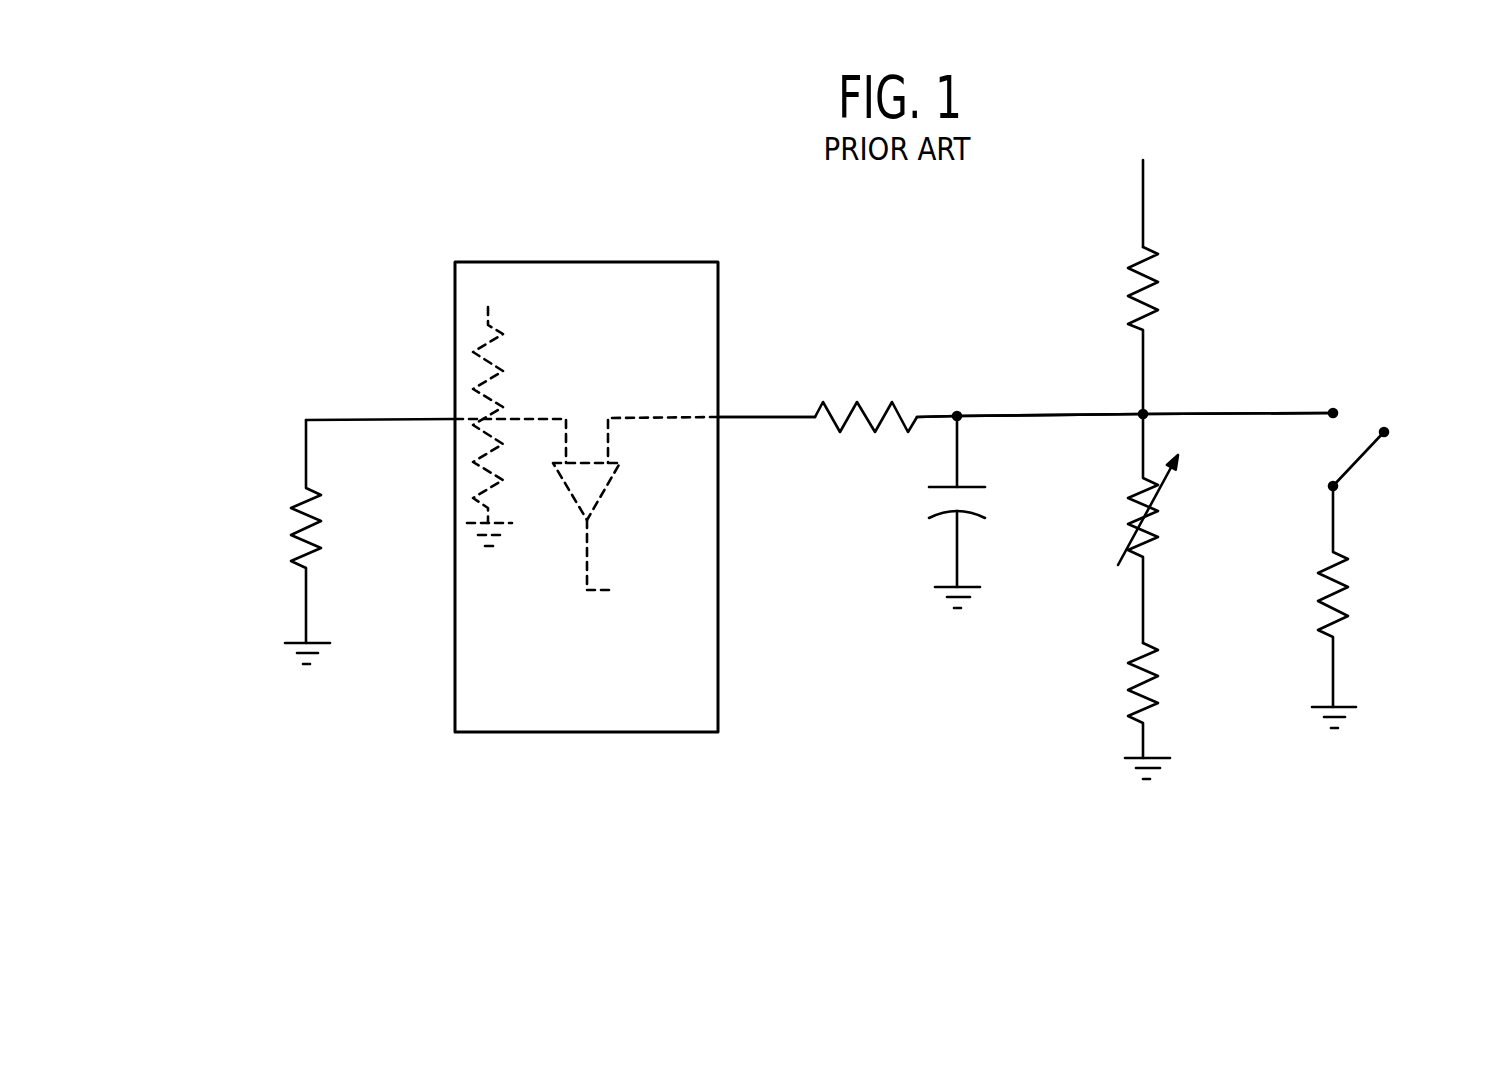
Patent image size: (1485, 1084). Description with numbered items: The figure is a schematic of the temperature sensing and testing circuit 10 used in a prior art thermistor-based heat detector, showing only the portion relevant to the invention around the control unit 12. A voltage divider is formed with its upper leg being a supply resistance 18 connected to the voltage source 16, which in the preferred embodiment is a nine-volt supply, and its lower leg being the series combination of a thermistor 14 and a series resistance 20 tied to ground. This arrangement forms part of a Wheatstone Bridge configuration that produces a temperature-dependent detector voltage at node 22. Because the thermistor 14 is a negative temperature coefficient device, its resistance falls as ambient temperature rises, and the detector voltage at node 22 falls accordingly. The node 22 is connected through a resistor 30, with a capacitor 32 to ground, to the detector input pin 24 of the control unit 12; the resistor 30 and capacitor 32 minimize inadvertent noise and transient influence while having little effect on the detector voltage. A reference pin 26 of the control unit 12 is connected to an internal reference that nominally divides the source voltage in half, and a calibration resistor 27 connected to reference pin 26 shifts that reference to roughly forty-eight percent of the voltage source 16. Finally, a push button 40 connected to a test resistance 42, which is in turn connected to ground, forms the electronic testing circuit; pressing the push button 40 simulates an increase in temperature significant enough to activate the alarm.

The temperature sensing and testing circuit 10 is at (1262, 307).
The control unit 12 is at (575, 282).
The thermistor 14 is at (1153, 530).
The voltage source 16 is at (1172, 142).
The supply resistance 18 is at (1155, 270).
The series resistance 20 is at (1153, 665).
The node 22 is at (1150, 408).
The detector input pin 24 is at (747, 417).
The reference pin 26 is at (384, 418).
The calibration resistor 27 is at (292, 538).
The resistor 30 is at (870, 412).
The capacitor 32 is at (973, 485).
The push button 40 is at (1362, 460).
The test resistance 42 is at (1338, 600).